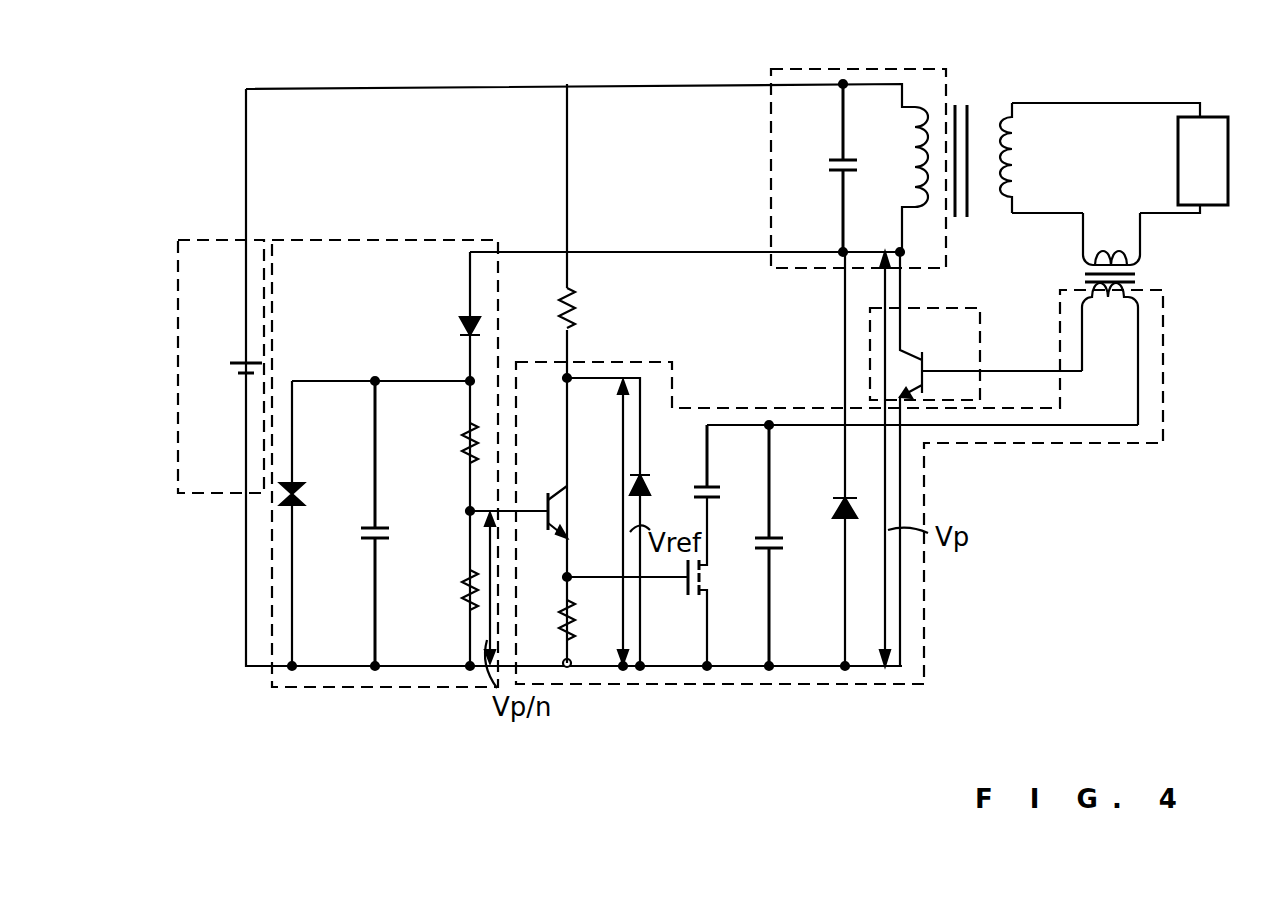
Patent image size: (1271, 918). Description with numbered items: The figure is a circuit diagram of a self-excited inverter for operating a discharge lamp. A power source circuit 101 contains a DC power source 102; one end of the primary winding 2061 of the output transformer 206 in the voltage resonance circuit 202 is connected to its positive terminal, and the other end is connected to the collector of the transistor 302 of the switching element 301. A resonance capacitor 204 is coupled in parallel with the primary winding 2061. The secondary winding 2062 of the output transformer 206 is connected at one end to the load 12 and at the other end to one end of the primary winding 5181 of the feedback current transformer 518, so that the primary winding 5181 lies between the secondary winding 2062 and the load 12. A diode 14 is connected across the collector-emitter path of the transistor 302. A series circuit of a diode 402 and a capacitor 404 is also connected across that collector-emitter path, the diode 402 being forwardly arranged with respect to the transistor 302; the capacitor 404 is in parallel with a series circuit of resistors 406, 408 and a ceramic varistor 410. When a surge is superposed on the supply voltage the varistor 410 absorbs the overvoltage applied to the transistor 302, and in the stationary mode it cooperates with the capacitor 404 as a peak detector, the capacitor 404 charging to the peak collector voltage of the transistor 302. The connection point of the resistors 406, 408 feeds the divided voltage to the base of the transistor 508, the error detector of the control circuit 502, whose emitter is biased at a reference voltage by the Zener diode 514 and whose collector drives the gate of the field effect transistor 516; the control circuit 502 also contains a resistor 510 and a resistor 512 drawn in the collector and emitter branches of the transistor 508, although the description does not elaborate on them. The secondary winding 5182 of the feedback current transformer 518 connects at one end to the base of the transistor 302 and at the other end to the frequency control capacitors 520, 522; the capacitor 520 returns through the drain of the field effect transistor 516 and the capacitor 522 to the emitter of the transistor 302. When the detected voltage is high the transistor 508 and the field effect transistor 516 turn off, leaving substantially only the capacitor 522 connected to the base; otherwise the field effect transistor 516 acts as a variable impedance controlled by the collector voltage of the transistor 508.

The power source circuit 101 is at (215, 498).
The DC power source 102 is at (240, 362).
The diode 402 is at (464, 328).
The capacitor 404 is at (366, 533).
The resistor 406 is at (467, 454).
The resistor 408 is at (466, 598).
The varistor 410 is at (306, 492).
The control circuit 502 is at (737, 685).
The transistor 508 is at (560, 518).
The resistor 510 is at (577, 310).
The resistor 512 is at (575, 610).
The Zener diode 514 is at (658, 470).
The field effect transistor 516 is at (706, 572).
The frequency control capacitor 520 is at (722, 494).
The frequency control capacitor 522 is at (784, 544).
The diode 14 is at (856, 506).
The voltage resonance circuit 202 is at (842, 68).
The resonance capacitor 204 is at (836, 168).
The output transformer 206 is at (978, 98).
The primary winding 2061 is at (910, 172).
The secondary winding 2062 is at (1012, 165).
The load 12 is at (1230, 168).
The feedback current transformer 518 is at (1140, 278).
The primary winding 5181 is at (1116, 246).
The secondary winding 5182 is at (1128, 328).
The switching element 301 is at (981, 354).
The transistor 302 is at (930, 366).